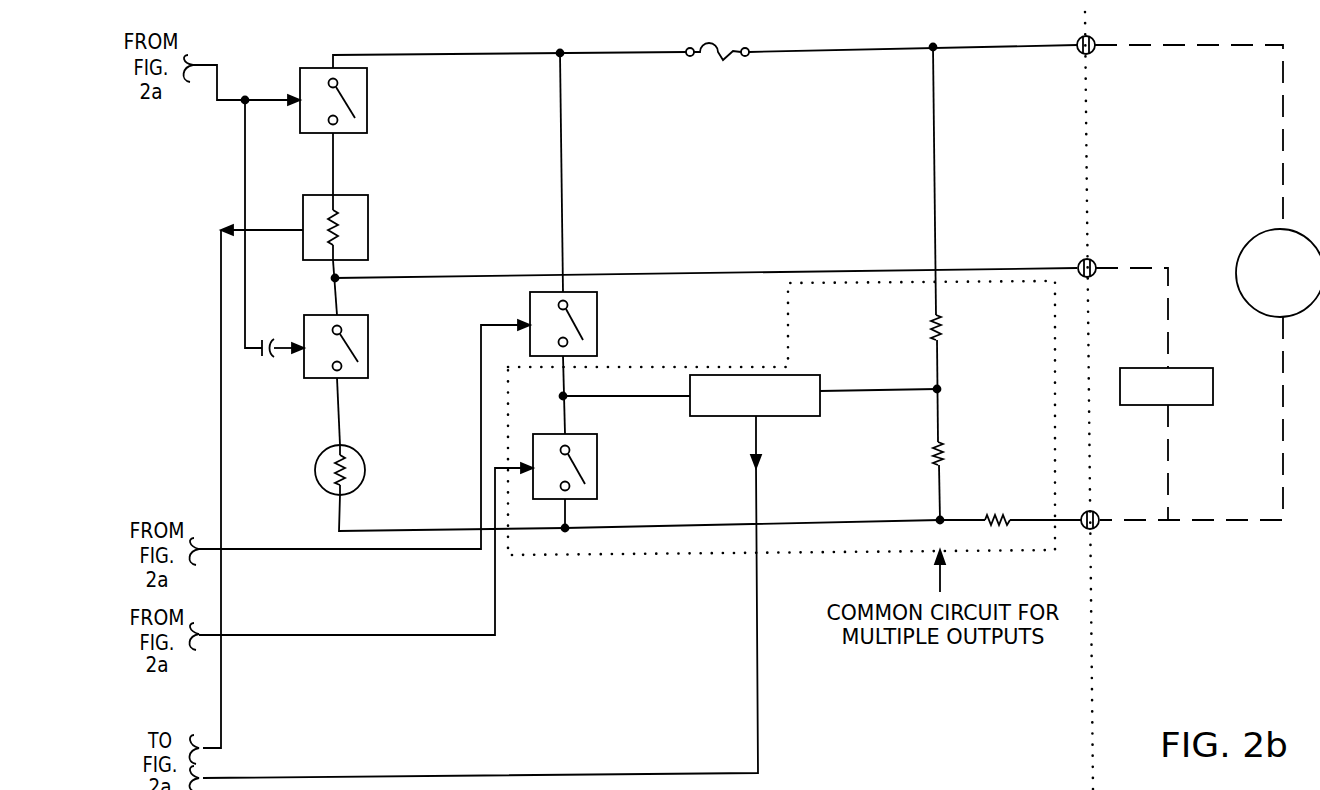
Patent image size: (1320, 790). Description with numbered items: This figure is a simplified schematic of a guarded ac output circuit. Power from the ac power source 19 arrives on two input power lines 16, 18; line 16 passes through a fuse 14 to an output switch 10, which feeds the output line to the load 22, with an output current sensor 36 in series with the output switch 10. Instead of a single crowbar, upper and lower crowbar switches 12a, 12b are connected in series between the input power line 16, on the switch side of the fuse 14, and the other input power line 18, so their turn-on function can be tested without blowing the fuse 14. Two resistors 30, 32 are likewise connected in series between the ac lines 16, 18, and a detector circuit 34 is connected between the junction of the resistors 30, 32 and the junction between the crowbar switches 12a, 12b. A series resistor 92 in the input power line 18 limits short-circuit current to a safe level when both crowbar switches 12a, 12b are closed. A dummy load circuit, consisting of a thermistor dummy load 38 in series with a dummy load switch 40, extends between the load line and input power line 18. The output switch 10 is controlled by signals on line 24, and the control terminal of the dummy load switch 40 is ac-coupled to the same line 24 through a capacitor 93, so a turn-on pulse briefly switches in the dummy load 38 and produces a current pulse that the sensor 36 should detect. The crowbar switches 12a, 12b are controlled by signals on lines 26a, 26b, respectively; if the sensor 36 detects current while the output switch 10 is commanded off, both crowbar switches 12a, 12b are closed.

The output switch 10 is at (376, 113).
The upper crowbar switch 12a is at (614, 322).
The lower crowbar switch 12b is at (616, 476).
The fuse 14 is at (700, 73).
The input power line 16 is at (1031, 63).
The input power line 18 is at (1146, 528).
The ac power source 19 is at (1251, 253).
The load 22 is at (1188, 400).
The control line 24 is at (246, 85).
The control line 26a is at (364, 456).
The control line 26b is at (366, 570).
The resistor 30 is at (971, 316).
The resistor 32 is at (973, 443).
The detector circuit 34 is at (776, 415).
The output current sensor 36 is at (386, 209).
The dummy load 38 is at (345, 490).
The dummy load switch 40 is at (377, 364).
The series resistor 92 is at (1001, 500).
The capacitor 93 is at (274, 377).